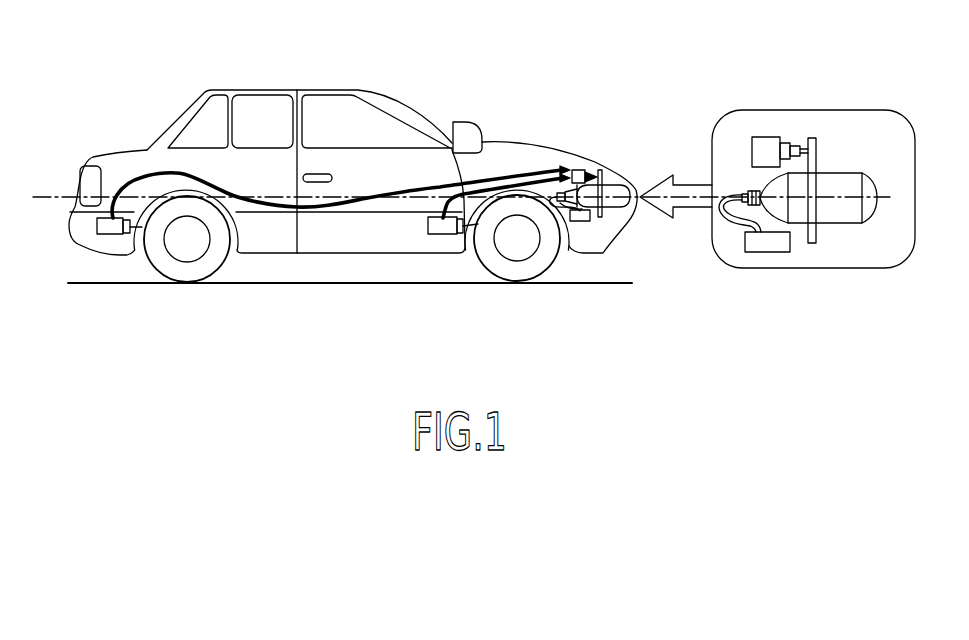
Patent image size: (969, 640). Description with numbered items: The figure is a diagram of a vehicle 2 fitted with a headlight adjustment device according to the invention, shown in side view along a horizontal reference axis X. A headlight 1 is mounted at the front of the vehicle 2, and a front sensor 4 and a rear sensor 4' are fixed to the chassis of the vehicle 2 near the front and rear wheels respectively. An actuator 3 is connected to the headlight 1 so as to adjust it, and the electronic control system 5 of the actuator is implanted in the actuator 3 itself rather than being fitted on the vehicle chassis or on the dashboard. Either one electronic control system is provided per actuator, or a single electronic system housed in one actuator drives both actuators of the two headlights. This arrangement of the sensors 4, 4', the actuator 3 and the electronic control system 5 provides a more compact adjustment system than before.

The headlight 1 is at (607, 185).
The vehicle 2 is at (401, 92).
The actuator 3 is at (751, 137).
The front sensor 4 is at (453, 273).
The rear sensor 4' is at (123, 278).
The electronic control system 5 is at (773, 137).
The longitudinal axis X is at (72, 196).